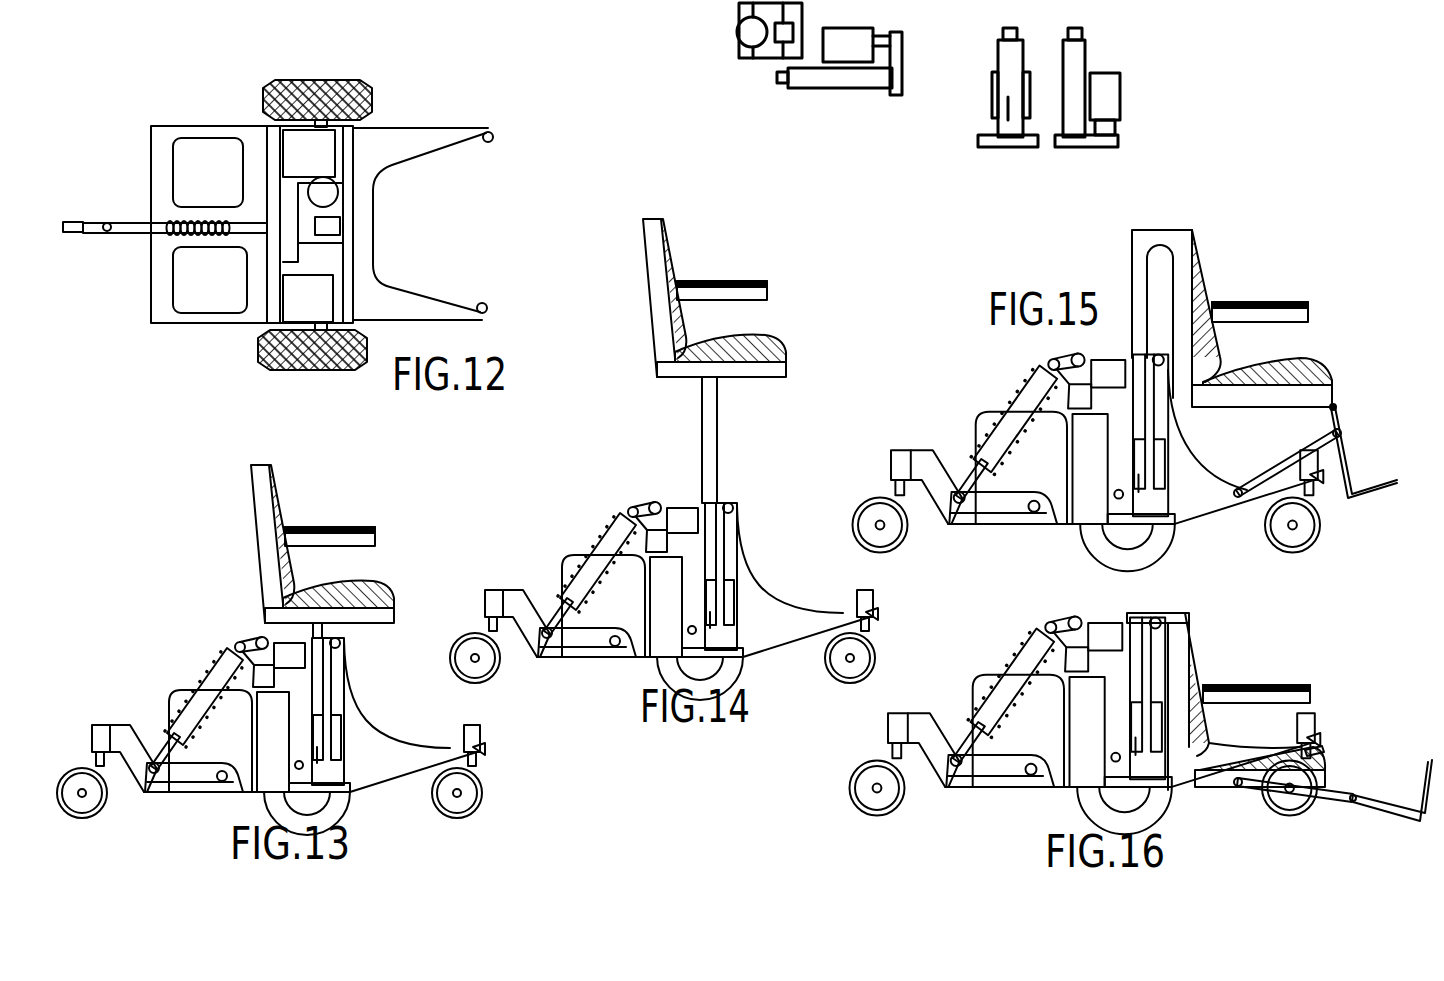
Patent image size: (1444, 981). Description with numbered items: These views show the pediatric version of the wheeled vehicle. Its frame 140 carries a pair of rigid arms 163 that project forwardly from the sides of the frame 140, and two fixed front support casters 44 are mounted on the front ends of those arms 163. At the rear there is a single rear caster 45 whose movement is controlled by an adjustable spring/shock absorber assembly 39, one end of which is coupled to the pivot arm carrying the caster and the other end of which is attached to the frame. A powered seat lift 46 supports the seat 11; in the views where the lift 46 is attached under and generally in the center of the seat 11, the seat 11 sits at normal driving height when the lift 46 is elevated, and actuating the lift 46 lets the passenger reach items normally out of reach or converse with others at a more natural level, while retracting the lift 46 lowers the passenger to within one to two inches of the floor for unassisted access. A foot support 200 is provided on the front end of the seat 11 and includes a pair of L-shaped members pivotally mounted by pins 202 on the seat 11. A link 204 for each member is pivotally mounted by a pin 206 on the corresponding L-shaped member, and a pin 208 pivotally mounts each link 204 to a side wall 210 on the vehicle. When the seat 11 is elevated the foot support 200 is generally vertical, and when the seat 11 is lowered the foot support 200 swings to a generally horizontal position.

In FIG. 13, the seat 11 is at (376, 593).
In FIG. 14, the seat 11 is at (778, 355).
In FIG. 15, the seat 11 is at (1306, 368).
In FIG. 16, the seat 11 is at (1331, 757).
In FIG. 13, the spring/shock absorber assembly 39 is at (199, 682).
In FIG. 14, the spring/shock absorber assembly 39 is at (600, 535).
In FIG. 15, the spring/shock absorber assembly 39 is at (1004, 412).
In FIG. 16, the spring/shock absorber assembly 39 is at (1032, 656).
In FIG. 12, the front support casters 44 is at (493, 137).
In FIG. 13, the front support casters 44 is at (476, 792).
In FIG. 14, the front support casters 44 is at (836, 677).
In FIG. 15, the front support casters 44 is at (1308, 530).
In FIG. 16, the front support casters 44 is at (1278, 818).
In FIG. 12, the rear spring/shock absorber assembly caster 45 is at (107, 231).
In FIG. 13, the rear spring/shock absorber assembly caster 45 is at (88, 768).
In FIG. 14, the rear spring/shock absorber assembly caster 45 is at (502, 668).
In FIG. 15, the rear spring/shock absorber assembly caster 45 is at (902, 530).
In FIG. 16, the rear spring/shock absorber assembly caster 45 is at (858, 797).
In FIG. 13, the seat lift 46 is at (317, 698).
In FIG. 14, the seat lift 46 is at (714, 432).
In FIG. 12, the frame 140 is at (228, 336).
In FIG. 12, the rigid arms 163 is at (436, 145).
In FIG. 15, the foot support 200 is at (1352, 469).
In FIG. 16, the foot support 200 is at (1390, 787).
In FIG. 15, the pins 202 is at (1336, 405).
In FIG. 15, the link 204 is at (1267, 472).
In FIG. 16, the link 204 is at (1338, 802).
In FIG. 15, the pin 206 is at (1320, 462).
In FIG. 15, the pin 208 is at (1233, 499).
In FIG. 15, the side wall 210 is at (1212, 478).